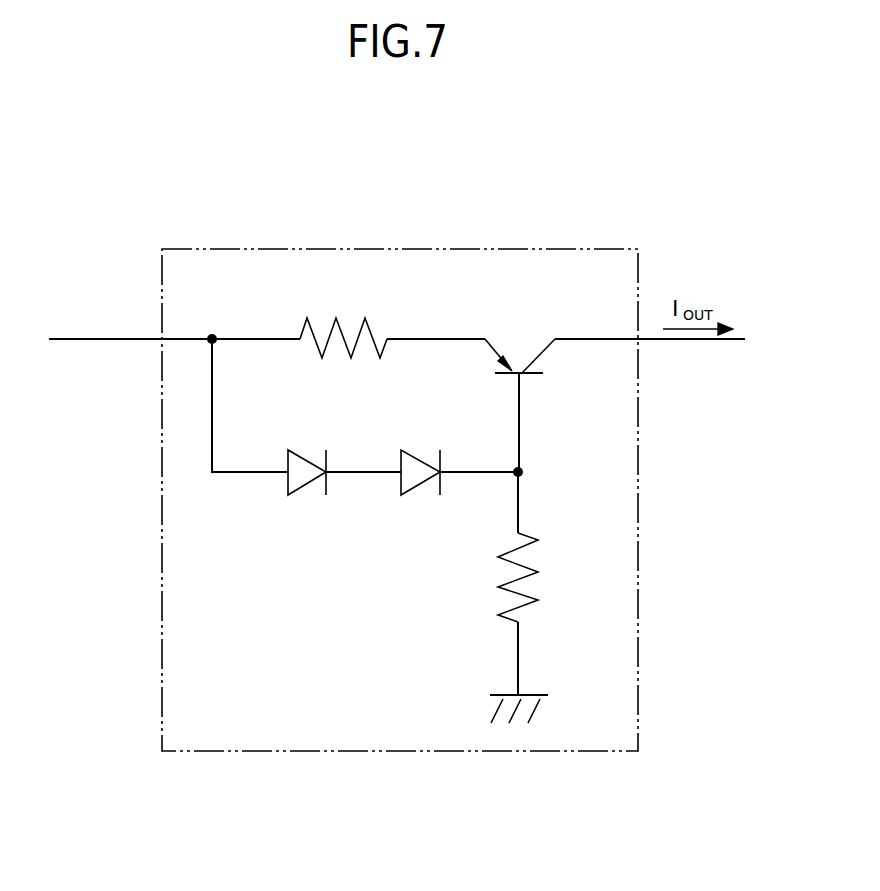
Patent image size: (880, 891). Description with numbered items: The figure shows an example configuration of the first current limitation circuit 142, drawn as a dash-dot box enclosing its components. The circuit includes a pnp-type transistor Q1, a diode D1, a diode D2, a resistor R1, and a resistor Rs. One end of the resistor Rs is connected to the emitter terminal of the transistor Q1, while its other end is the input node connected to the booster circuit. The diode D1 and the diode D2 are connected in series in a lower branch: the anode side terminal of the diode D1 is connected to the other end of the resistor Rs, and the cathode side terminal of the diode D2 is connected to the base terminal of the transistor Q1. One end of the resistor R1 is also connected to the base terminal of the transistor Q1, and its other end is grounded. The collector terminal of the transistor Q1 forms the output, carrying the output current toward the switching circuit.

The first current limitation circuit 142 is at (519, 249).
The resistor Rs is at (343, 322).
The pnp-type transistor Q1 is at (520, 392).
The diode D1 is at (307, 492).
The diode D2 is at (420, 492).
The resistor R1 is at (498, 577).